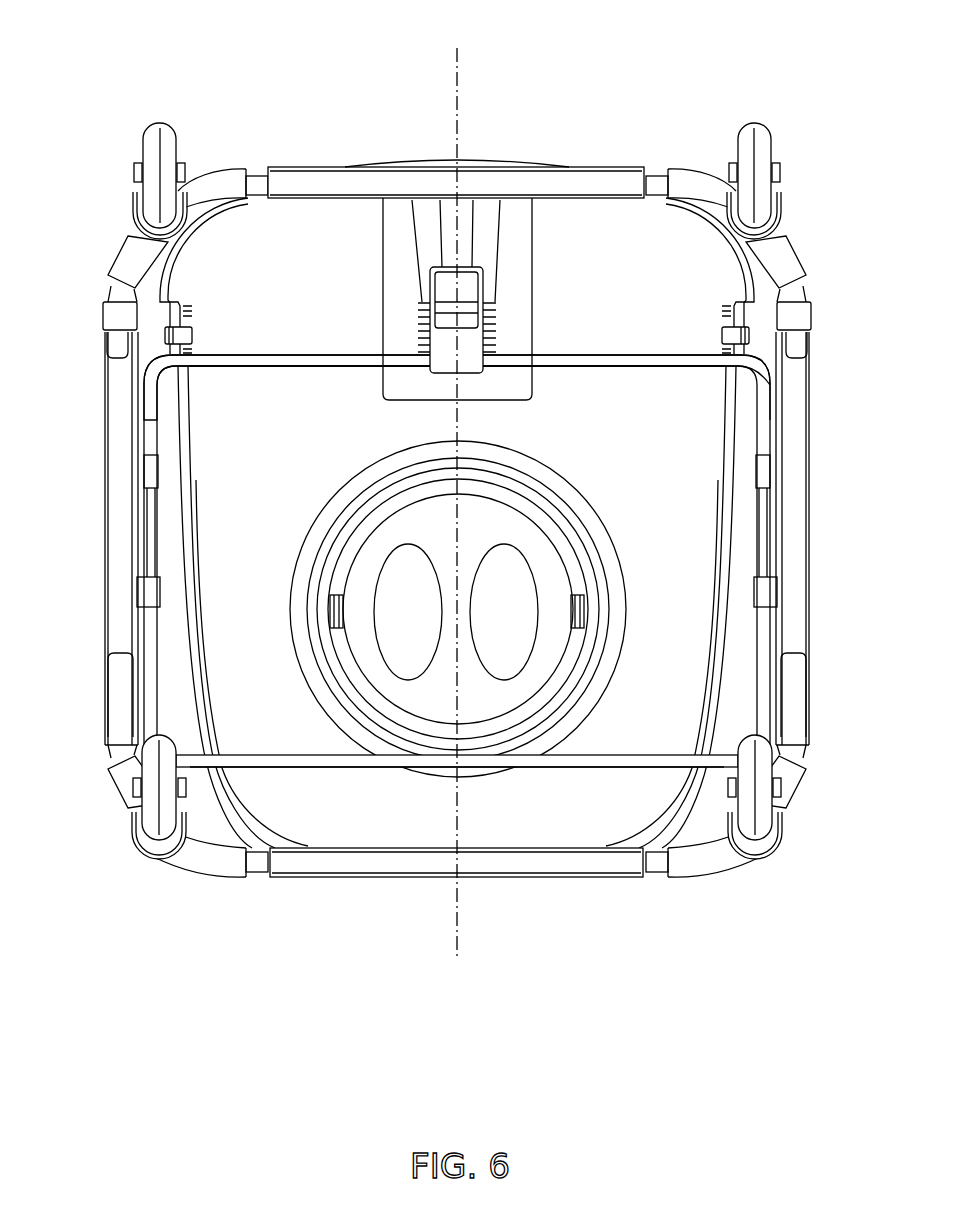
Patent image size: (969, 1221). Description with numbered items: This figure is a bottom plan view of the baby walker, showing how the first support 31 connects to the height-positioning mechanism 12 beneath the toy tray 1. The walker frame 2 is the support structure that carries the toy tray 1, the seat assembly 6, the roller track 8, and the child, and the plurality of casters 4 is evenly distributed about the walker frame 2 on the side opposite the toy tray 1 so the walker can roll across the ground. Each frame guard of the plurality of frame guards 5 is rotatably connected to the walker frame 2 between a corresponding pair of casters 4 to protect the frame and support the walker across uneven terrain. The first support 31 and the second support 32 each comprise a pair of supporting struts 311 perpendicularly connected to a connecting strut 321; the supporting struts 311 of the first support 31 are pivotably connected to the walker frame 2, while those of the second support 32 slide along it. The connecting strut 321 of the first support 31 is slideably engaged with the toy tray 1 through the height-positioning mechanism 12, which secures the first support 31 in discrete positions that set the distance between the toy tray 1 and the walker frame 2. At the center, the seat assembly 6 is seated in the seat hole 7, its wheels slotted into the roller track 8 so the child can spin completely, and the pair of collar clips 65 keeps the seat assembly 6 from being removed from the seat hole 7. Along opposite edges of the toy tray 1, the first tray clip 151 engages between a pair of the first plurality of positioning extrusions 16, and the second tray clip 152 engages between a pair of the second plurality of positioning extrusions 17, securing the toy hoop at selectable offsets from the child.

The toy tray 1 is at (383, 829).
The walker frame 2 is at (695, 866).
The plurality of casters 4 is at (163, 132).
The plurality of frame guards 5 is at (108, 438).
The seat assembly 6 is at (437, 709).
The seat hole 7 is at (458, 52).
The roller track 8 is at (432, 495).
The height-positioning mechanism 12 is at (442, 358).
The first plurality of positioning extrusions 16 is at (730, 306).
The second plurality of positioning extrusions 17 is at (184, 306).
The first support 31 is at (571, 353).
The second support 32 is at (604, 750).
The pair of collar clips 65 is at (342, 626).
The first tray clip 151 is at (749, 338).
The second tray clip 152 is at (165, 338).
The supporting strut 311 is at (153, 562).
The connecting strut 321 is at (611, 366).